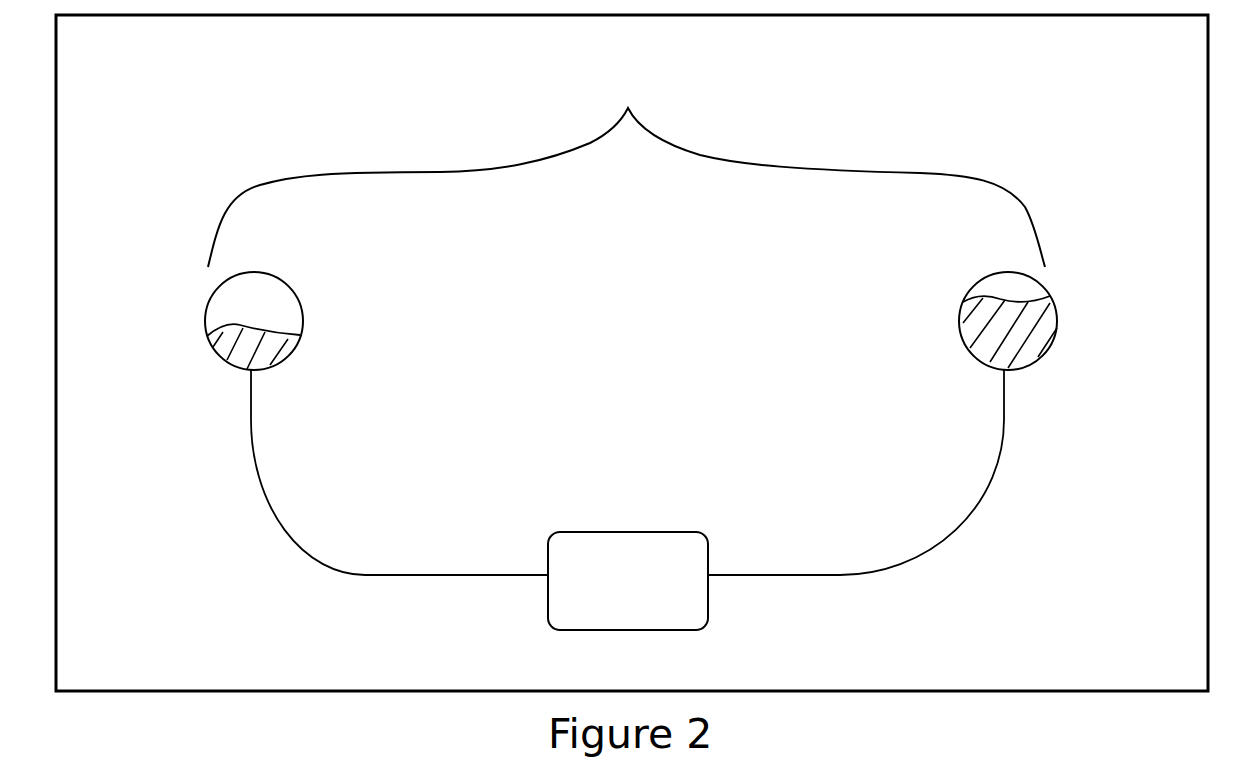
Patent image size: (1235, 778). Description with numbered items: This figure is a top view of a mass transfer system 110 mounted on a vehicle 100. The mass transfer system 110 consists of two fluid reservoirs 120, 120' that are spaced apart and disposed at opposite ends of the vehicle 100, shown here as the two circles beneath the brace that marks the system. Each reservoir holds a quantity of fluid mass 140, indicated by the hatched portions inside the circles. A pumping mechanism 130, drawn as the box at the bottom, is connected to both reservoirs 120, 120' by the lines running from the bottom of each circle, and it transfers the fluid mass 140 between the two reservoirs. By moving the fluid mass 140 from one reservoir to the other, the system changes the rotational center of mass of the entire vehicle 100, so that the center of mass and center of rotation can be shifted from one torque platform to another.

The vehicle 100 is at (1185, 67).
The mass transfer system 110 is at (626, 172).
The fluid reservoir 120 is at (309, 321).
The fluid reservoir 120' is at (956, 321).
The pumping mechanism 130 is at (655, 595).
The fluid mass 140 is at (297, 340).